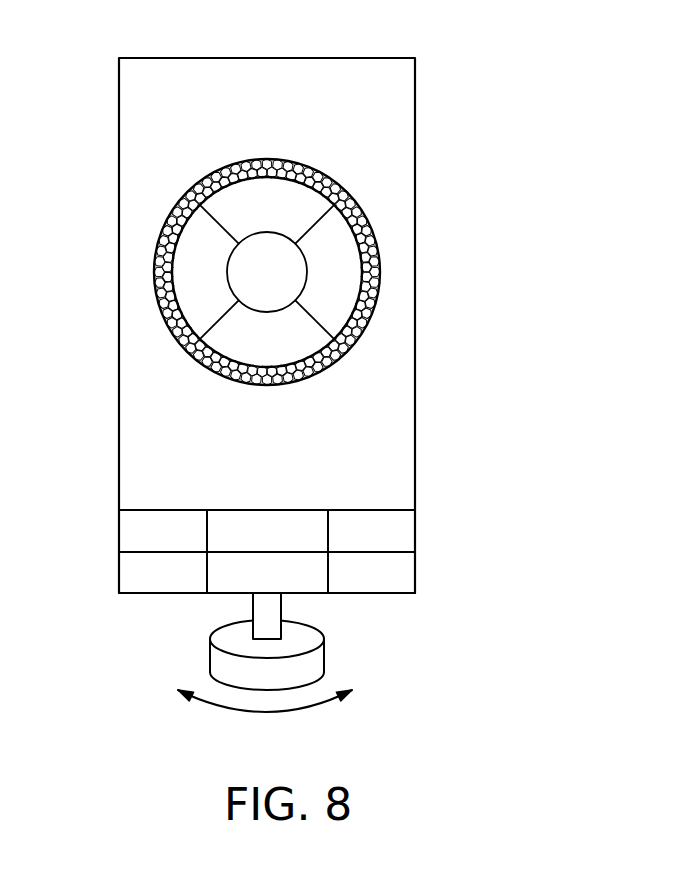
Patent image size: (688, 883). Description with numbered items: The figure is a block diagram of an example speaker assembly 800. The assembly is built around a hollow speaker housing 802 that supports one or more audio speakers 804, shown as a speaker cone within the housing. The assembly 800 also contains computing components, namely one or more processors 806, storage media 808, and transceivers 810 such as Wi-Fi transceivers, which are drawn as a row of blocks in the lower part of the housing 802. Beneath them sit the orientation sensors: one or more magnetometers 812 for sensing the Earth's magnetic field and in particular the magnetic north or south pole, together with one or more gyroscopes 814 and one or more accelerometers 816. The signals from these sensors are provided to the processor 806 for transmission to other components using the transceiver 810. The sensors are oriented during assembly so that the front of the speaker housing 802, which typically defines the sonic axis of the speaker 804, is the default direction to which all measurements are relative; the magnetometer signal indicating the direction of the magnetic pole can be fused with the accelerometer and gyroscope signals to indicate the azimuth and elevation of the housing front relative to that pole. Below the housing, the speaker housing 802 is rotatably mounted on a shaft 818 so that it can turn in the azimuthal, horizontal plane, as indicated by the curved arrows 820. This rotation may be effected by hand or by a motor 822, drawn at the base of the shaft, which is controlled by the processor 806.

The speaker assembly 800 is at (518, 42).
The speaker housing 802 is at (265, 58).
The audio speaker 804 is at (268, 158).
The processor 806 is at (119, 528).
The storage media 808 is at (268, 510).
The transceiver 810 is at (416, 528).
The magnetometer 812 is at (416, 572).
The gyroscope 814 is at (222, 593).
The accelerometer 816 is at (119, 572).
The shaft 818 is at (312, 638).
The arrows 820 is at (263, 712).
The motor 822 is at (326, 660).